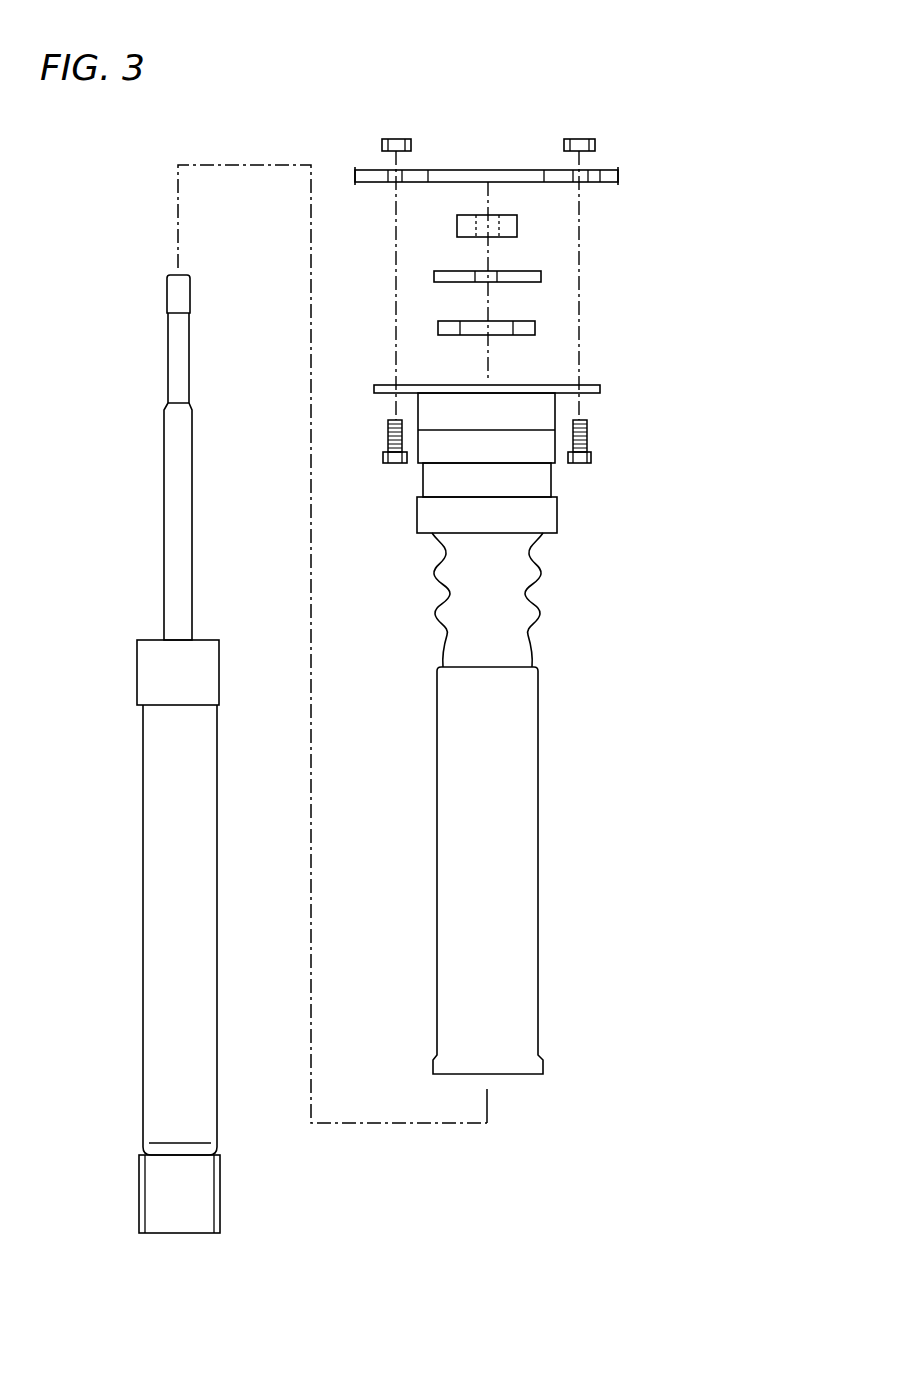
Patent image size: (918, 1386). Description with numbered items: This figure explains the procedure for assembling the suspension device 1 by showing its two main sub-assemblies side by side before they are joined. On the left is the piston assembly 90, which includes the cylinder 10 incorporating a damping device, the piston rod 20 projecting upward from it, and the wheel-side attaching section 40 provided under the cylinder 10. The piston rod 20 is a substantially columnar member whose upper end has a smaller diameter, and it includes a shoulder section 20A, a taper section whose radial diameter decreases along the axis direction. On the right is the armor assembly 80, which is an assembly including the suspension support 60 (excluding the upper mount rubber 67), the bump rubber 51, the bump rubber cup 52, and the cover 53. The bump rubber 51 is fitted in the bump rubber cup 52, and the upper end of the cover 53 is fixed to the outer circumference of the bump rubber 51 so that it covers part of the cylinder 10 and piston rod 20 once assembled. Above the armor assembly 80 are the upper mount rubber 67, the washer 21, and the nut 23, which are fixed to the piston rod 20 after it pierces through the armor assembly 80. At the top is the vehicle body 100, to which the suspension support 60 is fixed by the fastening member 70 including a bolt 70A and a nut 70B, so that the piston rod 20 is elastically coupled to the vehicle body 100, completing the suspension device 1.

The suspension device 1 is at (620, 136).
The piston assembly 90 is at (219, 268).
The piston rod 20 is at (196, 533).
The shoulder section 20A is at (192, 403).
The cylinder 10 is at (217, 884).
The wheel-side attaching section 40 is at (220, 1190).
The vehicle body 100 is at (605, 170).
The fastening member 70 is at (521, 315).
The nut 70B is at (389, 138).
The bolt 70A is at (587, 432).
The nut 23 is at (518, 227).
The washer 21 is at (541, 276).
The upper mount rubber 67 is at (535, 328).
The armor assembly 80 is at (627, 379).
The suspension support 60 is at (606, 481).
The bump rubber cup 52 is at (558, 517).
The bump rubber 51 is at (537, 600).
The cover 53 is at (538, 793).